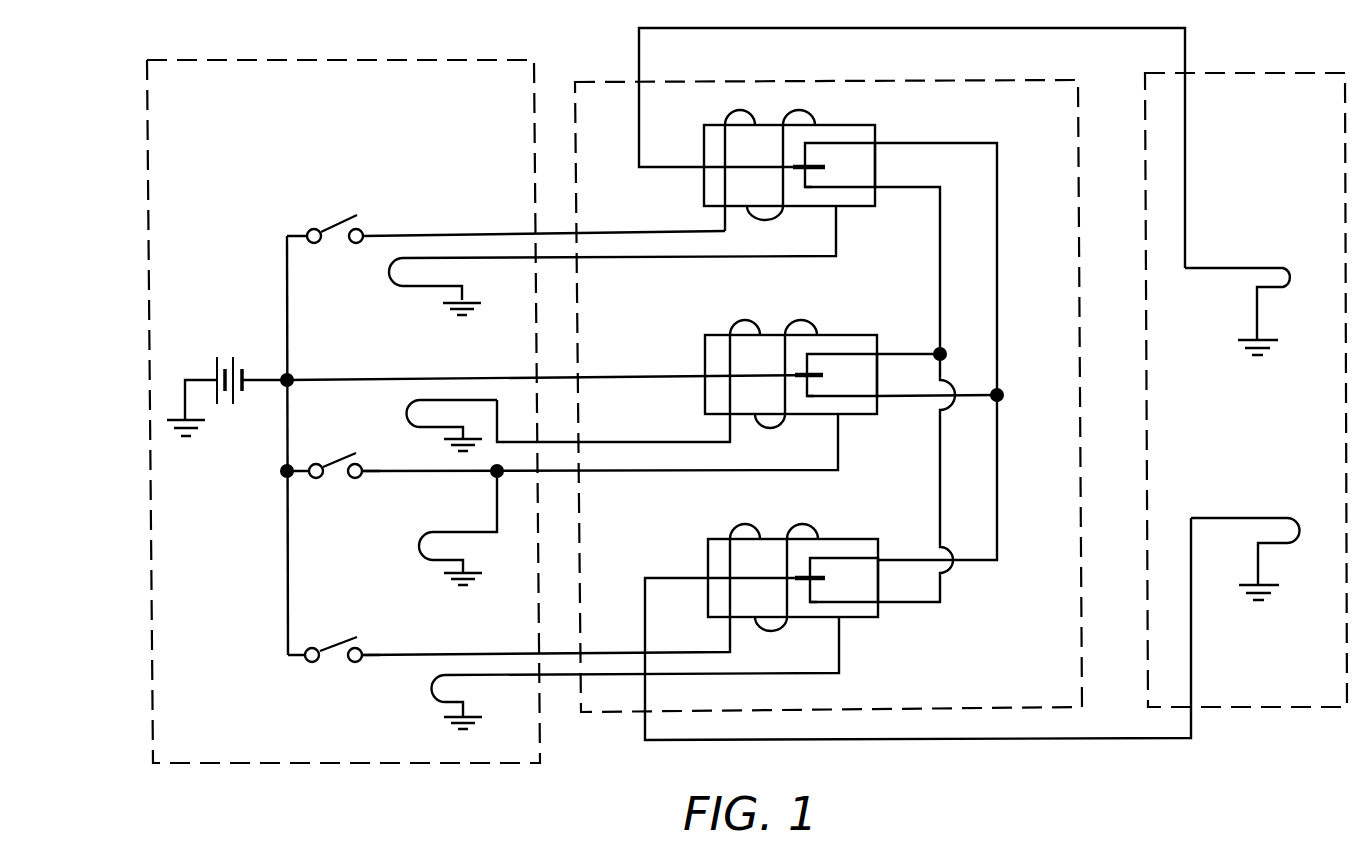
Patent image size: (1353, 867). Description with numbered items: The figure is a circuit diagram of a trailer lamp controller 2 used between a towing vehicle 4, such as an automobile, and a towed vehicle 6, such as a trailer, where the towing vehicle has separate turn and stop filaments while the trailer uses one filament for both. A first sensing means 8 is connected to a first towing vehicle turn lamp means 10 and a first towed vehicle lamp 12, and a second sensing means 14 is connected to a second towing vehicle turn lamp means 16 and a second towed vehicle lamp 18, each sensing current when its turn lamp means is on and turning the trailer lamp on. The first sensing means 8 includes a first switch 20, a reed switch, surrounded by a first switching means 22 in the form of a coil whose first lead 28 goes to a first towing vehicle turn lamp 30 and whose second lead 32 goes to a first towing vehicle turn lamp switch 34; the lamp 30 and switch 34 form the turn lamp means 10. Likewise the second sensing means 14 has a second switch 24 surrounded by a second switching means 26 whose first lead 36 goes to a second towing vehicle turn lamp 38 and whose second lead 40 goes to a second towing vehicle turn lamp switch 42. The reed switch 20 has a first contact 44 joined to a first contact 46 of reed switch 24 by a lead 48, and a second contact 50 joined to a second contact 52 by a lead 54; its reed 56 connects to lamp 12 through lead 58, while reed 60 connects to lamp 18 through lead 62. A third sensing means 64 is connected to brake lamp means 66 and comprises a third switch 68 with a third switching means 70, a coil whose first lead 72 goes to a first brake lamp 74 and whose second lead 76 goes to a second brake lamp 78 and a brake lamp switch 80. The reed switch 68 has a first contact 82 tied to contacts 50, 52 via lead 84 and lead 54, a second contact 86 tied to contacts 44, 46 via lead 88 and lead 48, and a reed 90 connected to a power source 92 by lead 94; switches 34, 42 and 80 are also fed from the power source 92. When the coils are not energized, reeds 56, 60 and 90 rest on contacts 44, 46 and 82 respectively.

The trailer lamp controller 2 is at (813, 78).
The towing vehicle 4 is at (403, 60).
The towed vehicle 6 is at (1282, 72).
The first sensing means 8 is at (893, 113).
The first towing vehicle turn lamp means 10 is at (442, 218).
The first towed vehicle lamp 12 is at (1268, 253).
The second sensing means 14 is at (890, 625).
The second towing vehicle turn lamp means 16 is at (357, 703).
The second towed vehicle lamp 18 is at (1272, 505).
The first switch 20 is at (704, 140).
The first switching means 22 is at (757, 113).
The second switch 24 is at (840, 540).
The second switching means 26 is at (748, 523).
The first lead 28 is at (647, 257).
The first towing vehicle turn lamp 30 is at (392, 275).
The second lead 32 is at (633, 232).
The first towing vehicle turn lamp switch 34 is at (331, 210).
The first lead 36 is at (735, 673).
The second towing vehicle turn lamp 38 is at (435, 693).
The second lead 40 is at (692, 650).
The second towing vehicle turn lamp switch 42 is at (338, 637).
The first contact 44 is at (808, 163).
The first contact 46 is at (812, 576).
The lead 48 is at (1000, 262).
The second contact 50 is at (808, 185).
The second contact 52 is at (812, 600).
The lead 54 is at (940, 247).
The reed 56 is at (768, 165).
The lead 58 is at (872, 27).
The reed 60 is at (745, 578).
The lead 62 is at (877, 742).
The third sensing means 64 is at (780, 300).
The brake lamp means 66 is at (377, 483).
The third switch 68 is at (705, 360).
The third switching means 70 is at (812, 322).
The first lead 72 is at (640, 442).
The first brake lamp 74 is at (410, 410).
The second lead 76 is at (635, 473).
The second brake lamp 78 is at (425, 547).
The brake lamp switch 80 is at (340, 457).
The first contact 82 is at (812, 360).
The lead 84 is at (893, 350).
The second contact 86 is at (812, 393).
The lead 88 is at (912, 398).
The reed 90 is at (745, 372).
The power source 92 is at (237, 347).
The lead 94 is at (452, 375).